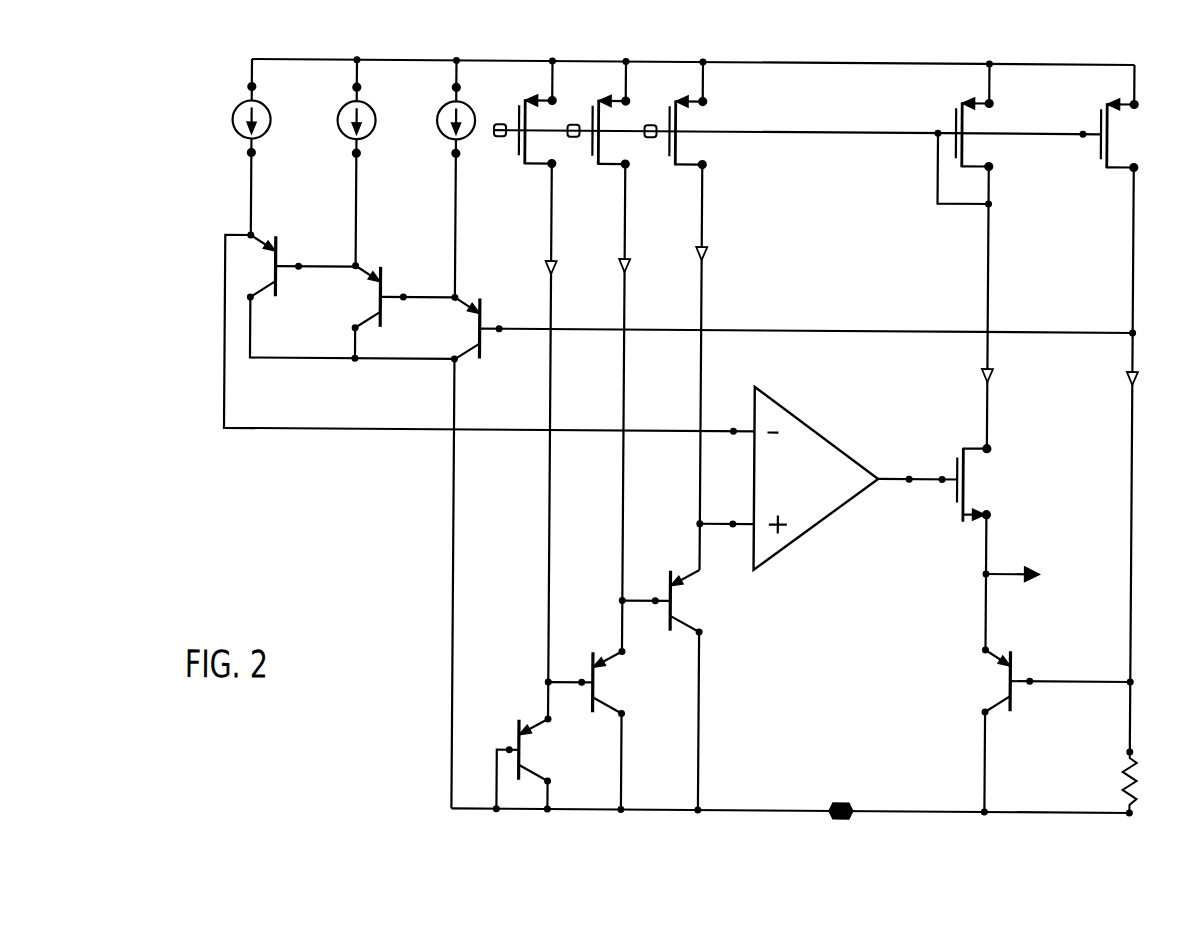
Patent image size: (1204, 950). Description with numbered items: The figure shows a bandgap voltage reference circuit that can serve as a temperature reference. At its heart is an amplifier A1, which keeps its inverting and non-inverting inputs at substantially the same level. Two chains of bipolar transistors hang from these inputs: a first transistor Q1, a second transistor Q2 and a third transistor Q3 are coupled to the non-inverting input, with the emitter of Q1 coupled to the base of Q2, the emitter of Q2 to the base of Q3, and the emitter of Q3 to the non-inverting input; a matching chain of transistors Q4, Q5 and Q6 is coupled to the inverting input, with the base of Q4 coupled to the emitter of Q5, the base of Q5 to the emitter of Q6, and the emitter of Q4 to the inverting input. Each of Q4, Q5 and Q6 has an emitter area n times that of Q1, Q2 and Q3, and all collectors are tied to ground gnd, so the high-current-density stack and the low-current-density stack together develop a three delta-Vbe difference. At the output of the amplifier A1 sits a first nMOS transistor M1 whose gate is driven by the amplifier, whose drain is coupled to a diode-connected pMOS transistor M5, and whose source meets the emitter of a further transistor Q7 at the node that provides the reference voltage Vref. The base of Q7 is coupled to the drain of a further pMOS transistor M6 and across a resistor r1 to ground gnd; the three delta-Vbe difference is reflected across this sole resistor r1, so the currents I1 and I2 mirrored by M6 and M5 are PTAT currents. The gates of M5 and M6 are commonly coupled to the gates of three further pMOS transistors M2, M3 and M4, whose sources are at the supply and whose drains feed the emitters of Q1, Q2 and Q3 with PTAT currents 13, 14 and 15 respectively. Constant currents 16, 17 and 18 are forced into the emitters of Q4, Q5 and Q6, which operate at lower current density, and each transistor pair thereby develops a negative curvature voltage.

The current I3 13 is at (568, 262).
The current I4 14 is at (643, 262).
The current I5 15 is at (721, 258).
The constant current I6 16 is at (234, 119).
The constant current I7 17 is at (339, 119).
The constant current I8 18 is at (439, 120).
The current I1 is at (1147, 389).
The current I2 is at (1003, 387).
The first nMOS transistor M1 is at (984, 483).
The pMOS transistor M2 is at (521, 116).
The pMOS transistor M3 is at (594, 116).
The pMOS transistor M4 is at (671, 116).
The diode connected pMOS transistor M5 is at (956, 121).
The further pMOS transistor M6 is at (1101, 123).
The first transistor Q1 is at (528, 733).
The second transistor Q2 is at (603, 663).
The third transistor Q3 is at (681, 584).
The transistor Q4 is at (268, 250).
The transistor Q5 is at (373, 280).
The transistor Q6 is at (473, 312).
The transistor Q7 is at (1009, 661).
The amplifier A1 is at (816, 479).
The resistor r1 is at (1115, 782).
The reference voltage Vref is at (1020, 557).
The ground gnd is at (840, 809).